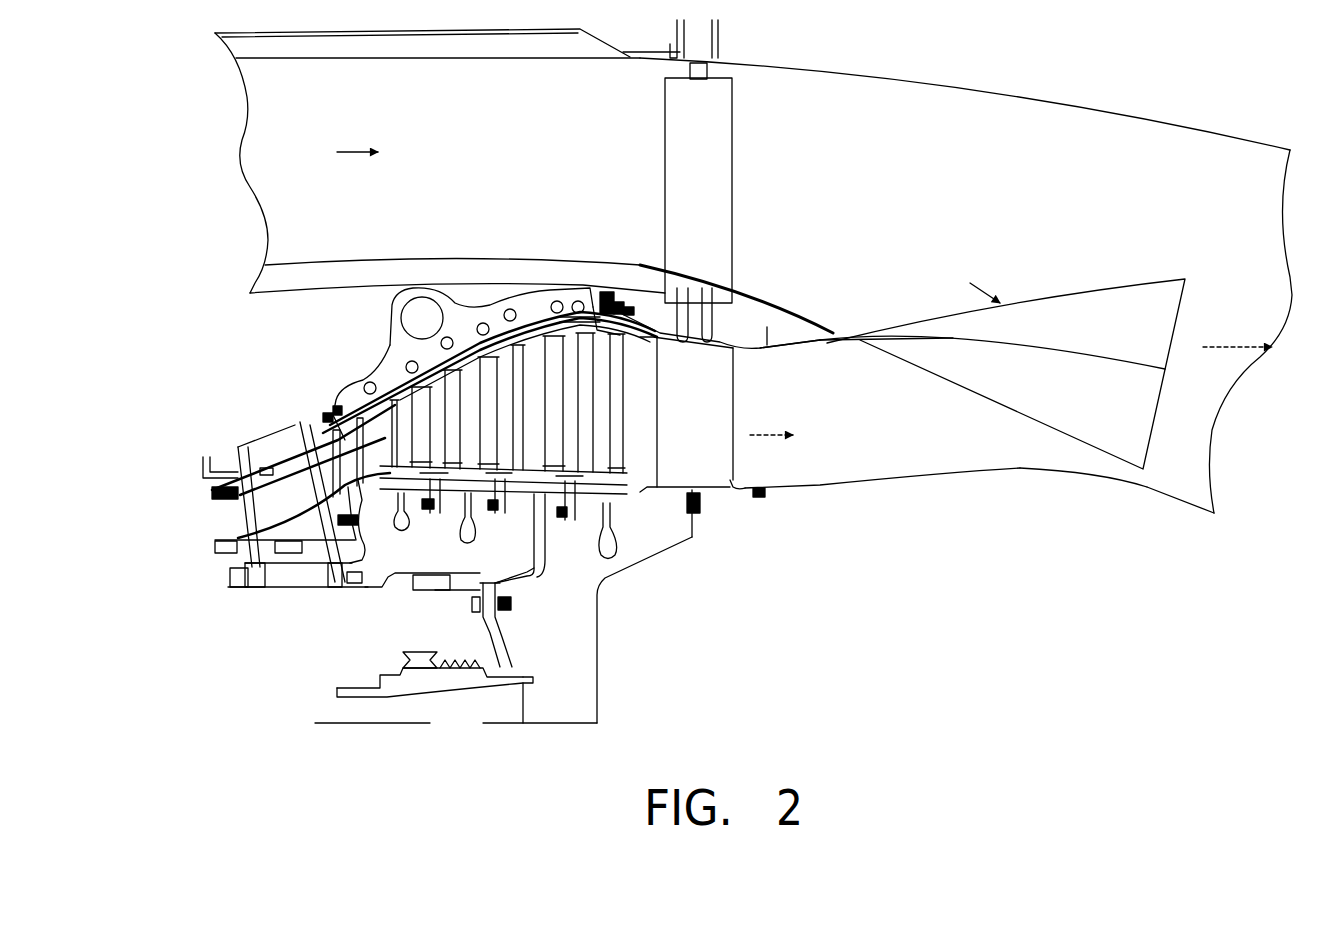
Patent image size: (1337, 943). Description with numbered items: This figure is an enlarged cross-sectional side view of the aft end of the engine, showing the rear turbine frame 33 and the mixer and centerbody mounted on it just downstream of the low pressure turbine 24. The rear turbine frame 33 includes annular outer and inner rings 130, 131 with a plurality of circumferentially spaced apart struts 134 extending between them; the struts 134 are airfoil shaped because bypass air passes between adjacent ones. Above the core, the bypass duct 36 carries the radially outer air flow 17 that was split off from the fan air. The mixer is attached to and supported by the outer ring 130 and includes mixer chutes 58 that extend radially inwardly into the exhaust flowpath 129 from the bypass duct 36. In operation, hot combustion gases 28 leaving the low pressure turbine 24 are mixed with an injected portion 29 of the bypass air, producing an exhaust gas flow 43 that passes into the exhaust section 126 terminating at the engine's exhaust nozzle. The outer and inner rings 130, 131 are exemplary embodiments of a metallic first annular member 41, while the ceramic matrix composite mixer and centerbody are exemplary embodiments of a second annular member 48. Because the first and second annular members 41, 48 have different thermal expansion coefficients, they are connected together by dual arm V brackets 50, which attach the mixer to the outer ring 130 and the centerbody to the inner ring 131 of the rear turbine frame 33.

The outer air flow 17 is at (357, 148).
The bypass duct 36 is at (517, 169).
The rear turbine frame 33 is at (717, 327).
The dual arm V brackets 50 is at (786, 332).
The first annular member 41 is at (820, 333).
The mixer chutes 58 is at (1147, 314).
The injected portion of the bypass air 29 is at (980, 290).
The exhaust section 126 is at (1214, 411).
The exhaust gas flow 43 is at (1230, 346).
The exhaust flowpath 129 is at (897, 444).
The second annular member 48 is at (1155, 490).
The hot combustion gases 28 is at (765, 432).
The outer ring 130 is at (721, 353).
The struts 134 is at (735, 395).
The inner ring 131 is at (663, 480).
The low pressure turbine 24 is at (455, 545).